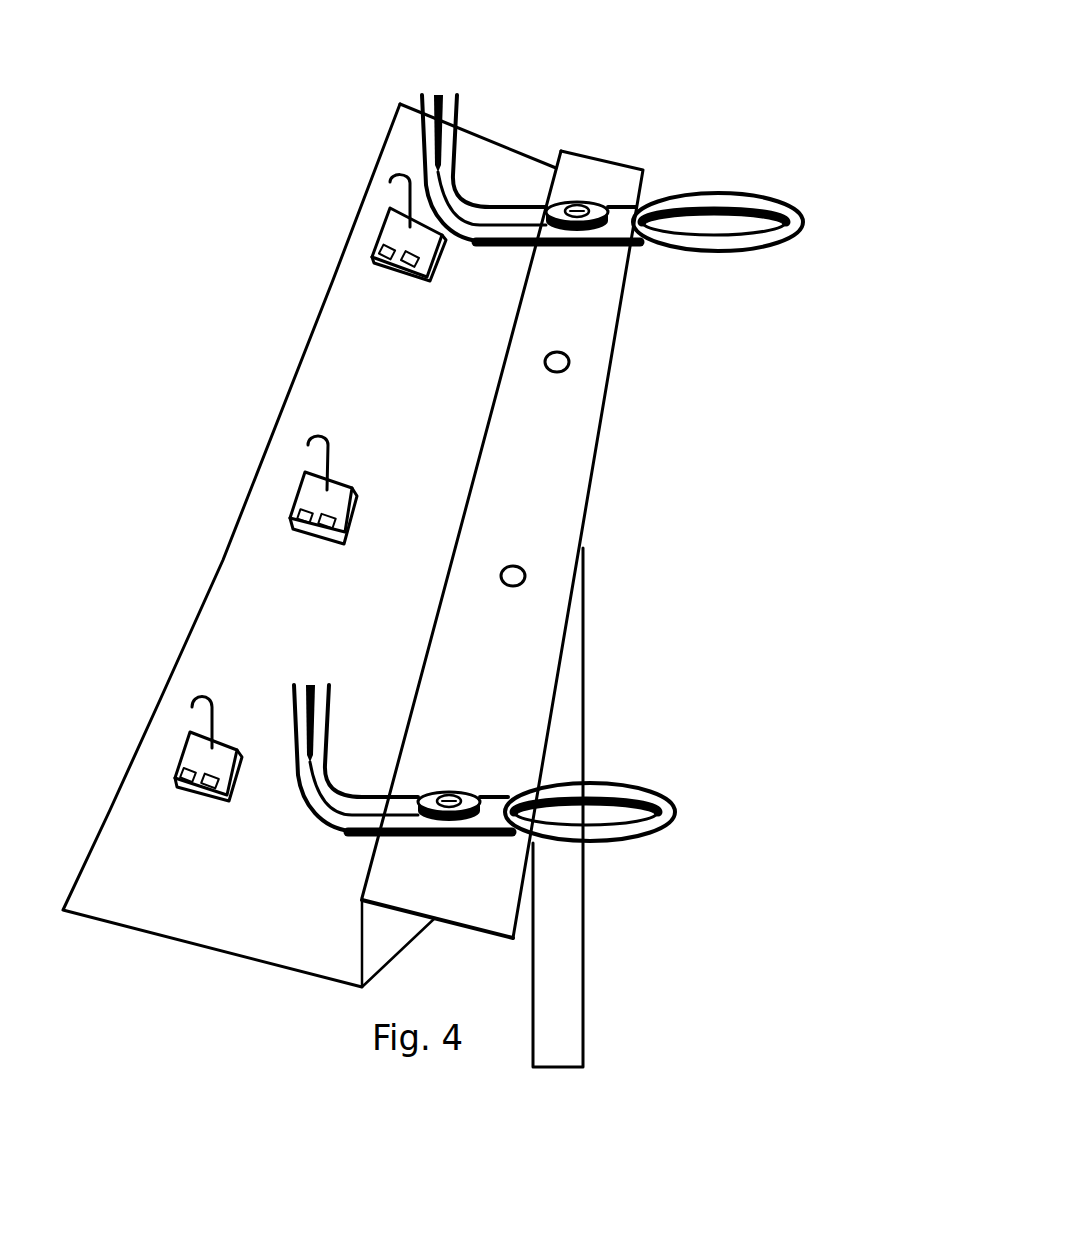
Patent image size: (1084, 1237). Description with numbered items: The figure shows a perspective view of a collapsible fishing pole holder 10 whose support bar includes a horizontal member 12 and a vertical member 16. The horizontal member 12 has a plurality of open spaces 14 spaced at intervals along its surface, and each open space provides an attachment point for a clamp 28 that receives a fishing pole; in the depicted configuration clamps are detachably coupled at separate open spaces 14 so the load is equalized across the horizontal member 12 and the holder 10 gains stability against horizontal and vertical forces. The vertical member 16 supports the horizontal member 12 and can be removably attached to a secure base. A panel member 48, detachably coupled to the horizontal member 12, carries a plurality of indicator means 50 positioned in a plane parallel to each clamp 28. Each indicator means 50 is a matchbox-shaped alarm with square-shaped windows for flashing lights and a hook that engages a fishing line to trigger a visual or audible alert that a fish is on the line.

The fishing pole holder 10 is at (773, 1010).
The horizontal member 12 is at (362, 900).
The open spaces 14 is at (570, 361).
The vertical member 16 is at (583, 930).
The clamp 28 is at (475, 190).
The panel member 48 is at (383, 132).
The indicator means 50 is at (410, 290).